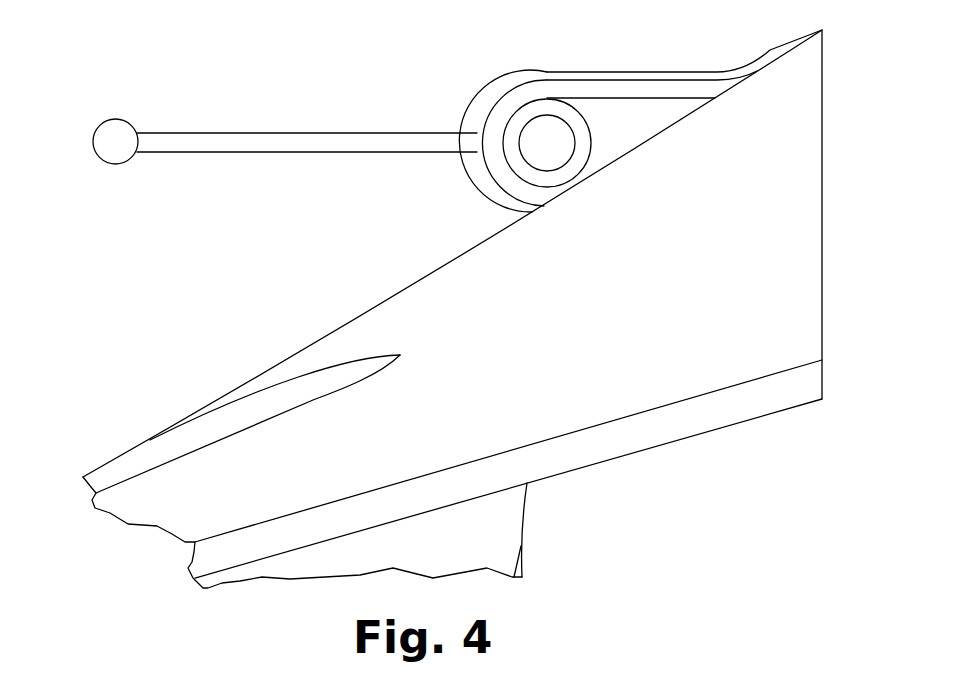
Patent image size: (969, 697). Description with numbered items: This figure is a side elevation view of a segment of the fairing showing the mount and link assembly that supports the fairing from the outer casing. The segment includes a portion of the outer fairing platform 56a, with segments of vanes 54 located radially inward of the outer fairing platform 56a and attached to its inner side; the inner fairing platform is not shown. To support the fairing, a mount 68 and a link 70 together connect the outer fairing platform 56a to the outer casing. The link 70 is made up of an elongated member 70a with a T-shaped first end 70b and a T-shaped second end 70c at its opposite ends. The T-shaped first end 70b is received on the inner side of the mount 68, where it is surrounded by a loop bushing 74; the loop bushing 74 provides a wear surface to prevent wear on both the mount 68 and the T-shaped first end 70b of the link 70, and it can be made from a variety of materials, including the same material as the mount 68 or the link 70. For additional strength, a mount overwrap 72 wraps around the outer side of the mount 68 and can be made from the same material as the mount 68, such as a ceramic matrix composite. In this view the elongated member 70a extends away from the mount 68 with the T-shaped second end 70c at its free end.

The vanes 54 is at (502, 523).
The outer fairing platform 56a is at (770, 128).
The mount 68 is at (675, 88).
The link 70 is at (318, 147).
The elongated member 70a is at (212, 133).
The T-shaped first end 70b is at (545, 150).
The T-shaped second end 70c is at (100, 120).
The mount overwrap 72 is at (610, 77).
The loop bushing 74 is at (517, 123).